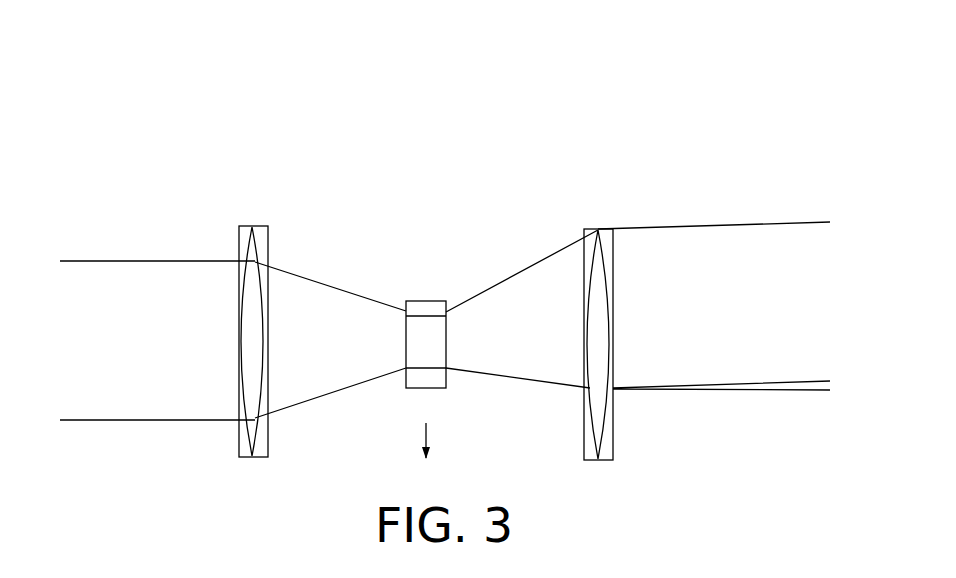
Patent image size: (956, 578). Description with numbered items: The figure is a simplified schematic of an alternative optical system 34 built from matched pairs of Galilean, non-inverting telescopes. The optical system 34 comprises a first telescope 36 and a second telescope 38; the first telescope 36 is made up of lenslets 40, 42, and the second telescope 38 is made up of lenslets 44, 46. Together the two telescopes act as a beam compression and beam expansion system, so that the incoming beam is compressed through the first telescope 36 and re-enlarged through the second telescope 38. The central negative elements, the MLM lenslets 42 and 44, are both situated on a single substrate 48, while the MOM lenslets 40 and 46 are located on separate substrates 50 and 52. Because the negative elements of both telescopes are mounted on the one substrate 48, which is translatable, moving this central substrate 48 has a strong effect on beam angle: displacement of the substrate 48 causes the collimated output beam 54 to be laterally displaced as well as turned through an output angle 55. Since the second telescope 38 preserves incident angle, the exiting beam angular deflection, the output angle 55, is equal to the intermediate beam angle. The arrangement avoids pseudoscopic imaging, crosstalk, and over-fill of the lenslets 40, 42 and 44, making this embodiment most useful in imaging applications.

The optical system 34 is at (314, 165).
The first telescope 36 is at (329, 410).
The second telescope 38 is at (525, 265).
The lenslet 40 is at (245, 260).
The lenslet 42 is at (404, 307).
The lenslet 44 is at (448, 306).
The lenslet 46 is at (603, 254).
The substrate 48 is at (429, 382).
The substrate 50 is at (268, 452).
The substrate 52 is at (613, 453).
The collimated output beam 54 is at (743, 224).
The output angle 55 is at (790, 312).